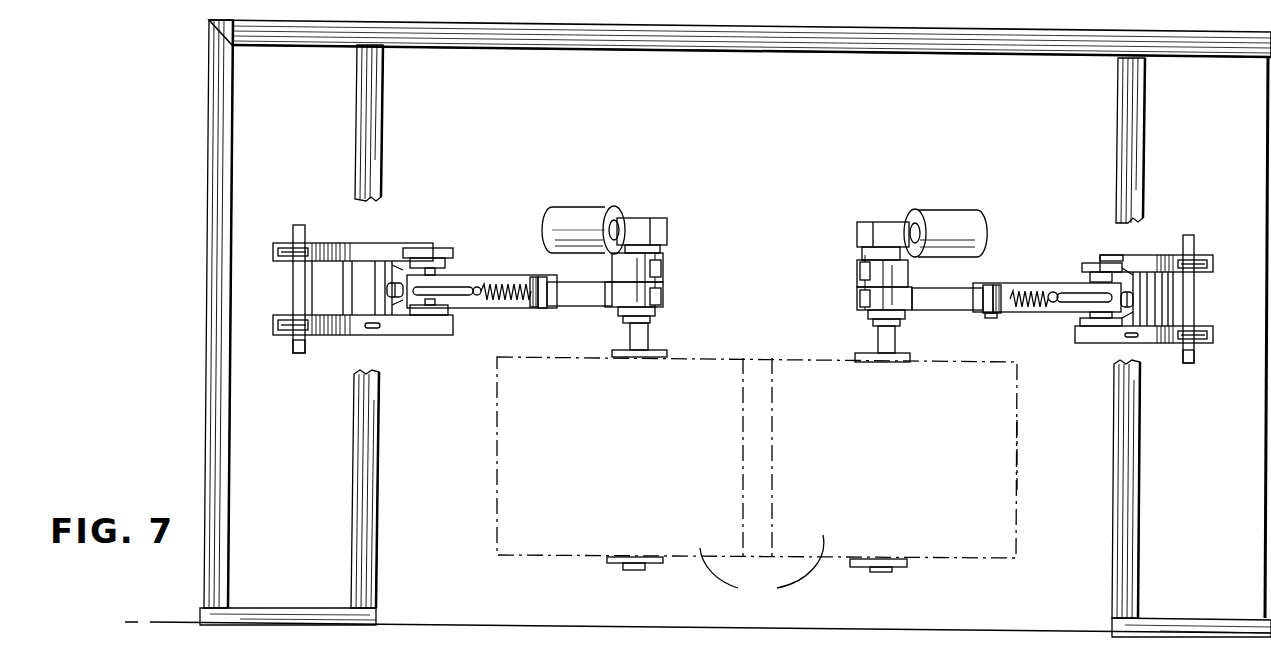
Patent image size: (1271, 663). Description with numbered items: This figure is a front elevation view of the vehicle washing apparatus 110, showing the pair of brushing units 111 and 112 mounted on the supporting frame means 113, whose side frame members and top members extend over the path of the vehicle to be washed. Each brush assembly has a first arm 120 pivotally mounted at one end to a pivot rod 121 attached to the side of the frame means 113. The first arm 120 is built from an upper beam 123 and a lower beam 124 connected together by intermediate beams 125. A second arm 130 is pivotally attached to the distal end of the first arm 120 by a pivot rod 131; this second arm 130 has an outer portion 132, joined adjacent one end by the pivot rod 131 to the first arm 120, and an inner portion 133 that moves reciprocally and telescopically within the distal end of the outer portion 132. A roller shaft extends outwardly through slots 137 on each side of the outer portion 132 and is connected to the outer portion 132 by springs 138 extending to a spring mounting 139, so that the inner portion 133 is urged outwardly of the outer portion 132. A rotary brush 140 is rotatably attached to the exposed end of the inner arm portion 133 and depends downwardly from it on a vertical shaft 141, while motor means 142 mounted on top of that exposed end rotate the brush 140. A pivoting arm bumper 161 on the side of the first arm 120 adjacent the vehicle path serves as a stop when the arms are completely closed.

The vehicle washing apparatus 110 is at (200, 281).
The brushing unit 111 is at (490, 457).
The brushing unit 112 is at (1023, 453).
The supporting frame means 113 is at (215, 102).
The first arm 120 is at (284, 237).
The pivot rod 121 is at (298, 352).
The upper beam 123 is at (338, 243).
The lower beam 124 is at (350, 336).
The intermediate beams 125 is at (383, 288).
The second arm 130 is at (519, 270).
The pivot rod 131 is at (440, 272).
The outer portion 132 is at (477, 310).
The inner portion 133 is at (567, 292).
The slots 137 is at (1075, 305).
The springs 138 is at (512, 309).
The spring mounting 139 is at (985, 320).
The rotary brush 140 is at (762, 569).
The vertical shaft 141 is at (648, 337).
The motor means 142 is at (583, 215).
The pivoting arm bumper 161 is at (406, 300).